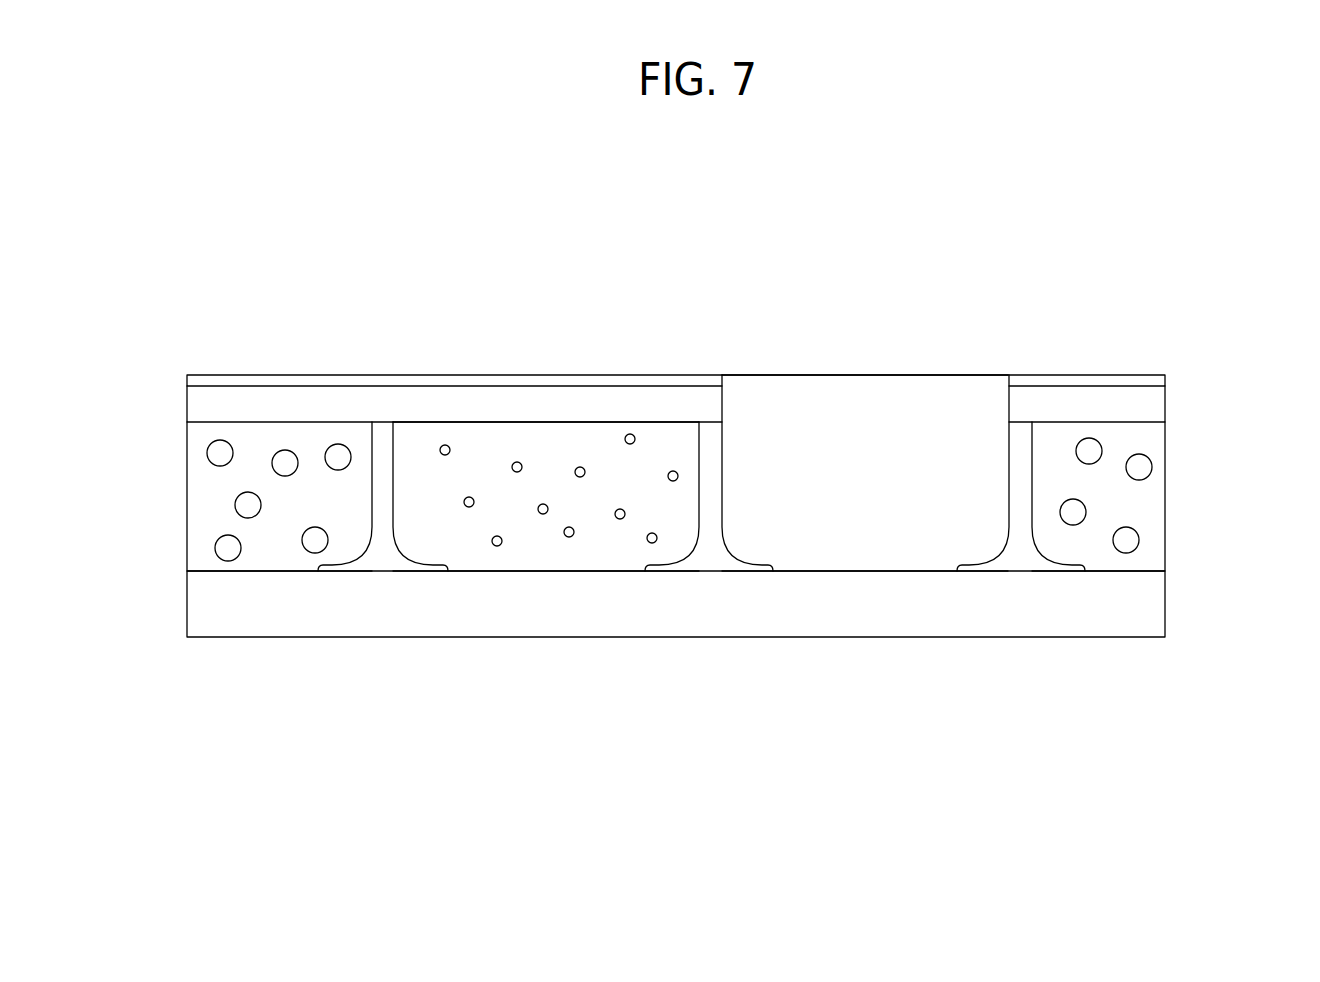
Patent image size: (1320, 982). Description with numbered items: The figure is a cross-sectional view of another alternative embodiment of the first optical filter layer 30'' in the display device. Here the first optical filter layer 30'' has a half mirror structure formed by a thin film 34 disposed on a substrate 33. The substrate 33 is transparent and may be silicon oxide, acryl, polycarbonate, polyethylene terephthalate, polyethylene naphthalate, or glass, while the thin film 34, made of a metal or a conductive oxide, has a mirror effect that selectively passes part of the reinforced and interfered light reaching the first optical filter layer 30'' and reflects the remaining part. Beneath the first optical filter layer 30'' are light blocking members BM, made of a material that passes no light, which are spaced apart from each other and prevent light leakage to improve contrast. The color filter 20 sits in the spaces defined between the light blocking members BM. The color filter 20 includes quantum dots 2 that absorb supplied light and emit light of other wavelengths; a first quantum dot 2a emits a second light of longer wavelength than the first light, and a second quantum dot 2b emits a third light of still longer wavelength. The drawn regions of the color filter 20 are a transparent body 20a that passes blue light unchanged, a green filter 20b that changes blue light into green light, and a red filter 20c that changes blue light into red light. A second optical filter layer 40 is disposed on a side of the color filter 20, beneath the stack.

The quantum dot 2 is at (645, 593).
The first quantum dot 2a is at (569, 538).
The second quantum dot 2b is at (220, 452).
The color filter 20 is at (674, 537).
The transparent body 20a is at (863, 403).
The green filter 20b is at (466, 545).
The red filter 20c is at (198, 547).
The first optical filter layer 30'' is at (734, 390).
The substrate 33 is at (1155, 402).
The thin film 34 is at (1155, 380).
The second optical filter layer 40 is at (1153, 604).
The light blocking member BM is at (382, 557).